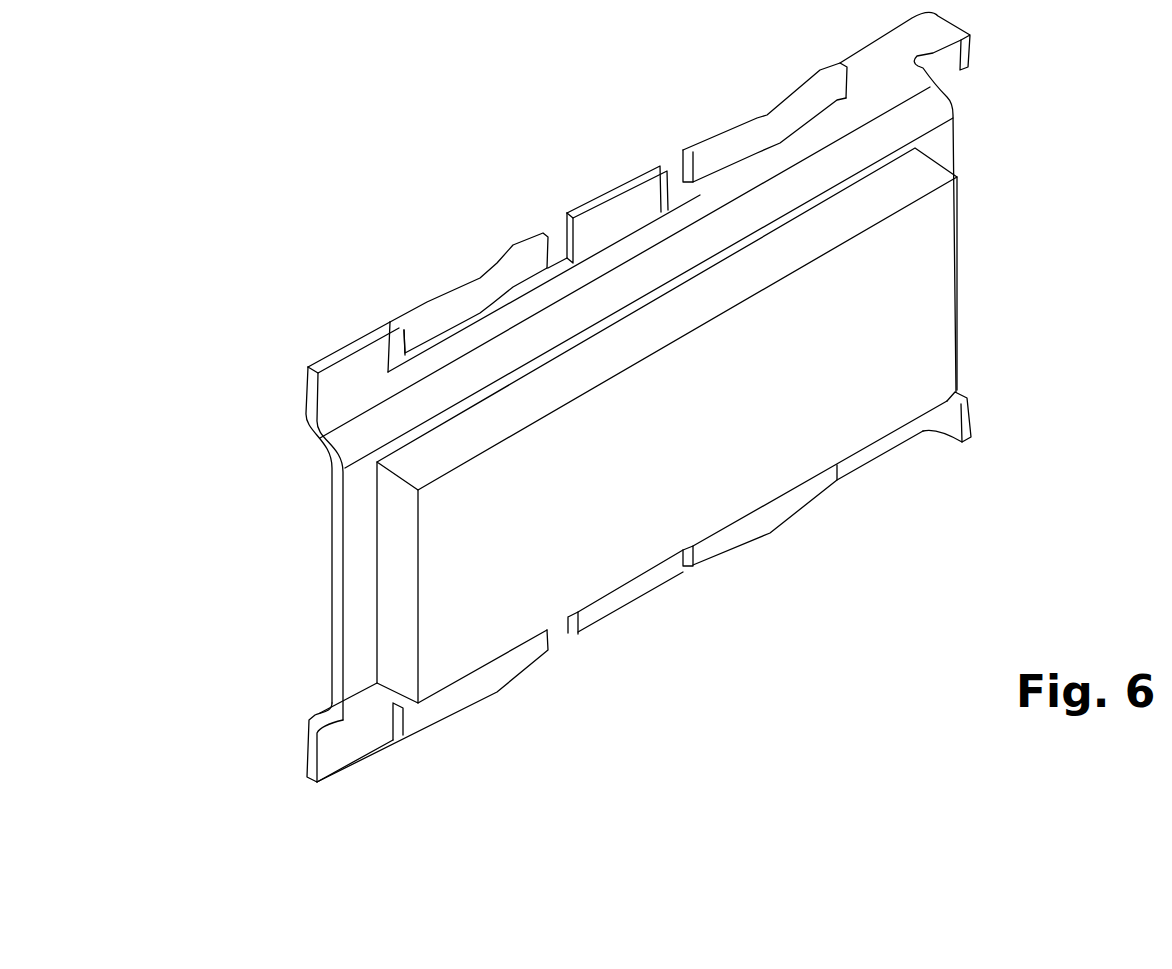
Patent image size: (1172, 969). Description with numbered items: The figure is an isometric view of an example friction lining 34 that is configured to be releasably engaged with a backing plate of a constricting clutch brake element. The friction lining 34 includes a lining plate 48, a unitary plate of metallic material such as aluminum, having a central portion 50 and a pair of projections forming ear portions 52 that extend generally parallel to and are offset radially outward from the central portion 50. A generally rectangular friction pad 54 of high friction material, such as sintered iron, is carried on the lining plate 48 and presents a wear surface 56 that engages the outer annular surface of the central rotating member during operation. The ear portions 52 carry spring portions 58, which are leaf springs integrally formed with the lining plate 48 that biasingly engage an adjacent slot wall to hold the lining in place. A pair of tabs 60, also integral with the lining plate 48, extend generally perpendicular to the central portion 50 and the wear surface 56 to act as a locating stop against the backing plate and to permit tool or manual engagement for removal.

The friction lining 34 is at (1016, 372).
The lining plate 48 is at (375, 755).
The central portion 50 is at (332, 582).
The ear portions 52 is at (308, 381).
The friction pad 54 is at (956, 268).
The wear surface 56 is at (705, 447).
The spring portions 58 is at (510, 250).
The tabs 60 is at (963, 50).